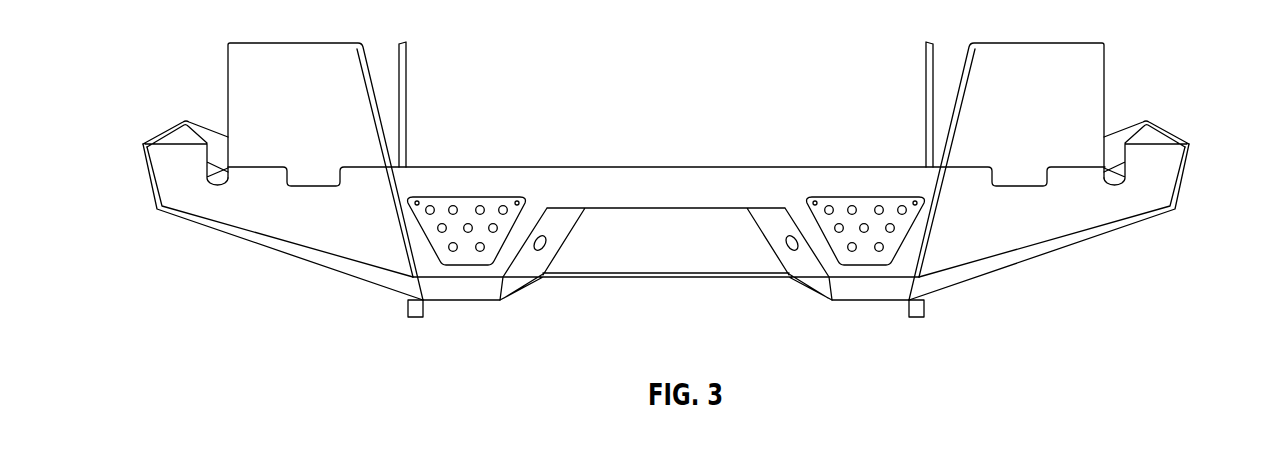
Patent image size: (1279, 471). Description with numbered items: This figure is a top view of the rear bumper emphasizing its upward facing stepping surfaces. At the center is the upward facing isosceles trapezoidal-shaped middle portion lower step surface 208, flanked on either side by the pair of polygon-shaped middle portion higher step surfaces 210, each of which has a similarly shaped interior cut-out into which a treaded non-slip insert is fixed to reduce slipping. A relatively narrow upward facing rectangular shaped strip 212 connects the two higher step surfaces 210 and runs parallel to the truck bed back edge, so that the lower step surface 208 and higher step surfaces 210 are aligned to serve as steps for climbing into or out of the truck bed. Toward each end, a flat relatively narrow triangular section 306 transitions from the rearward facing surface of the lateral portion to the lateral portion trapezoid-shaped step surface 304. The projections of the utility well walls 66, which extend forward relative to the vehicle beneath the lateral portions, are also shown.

The utility well wall 66 is at (1053, 57).
The middle portion lower step surface 208 is at (718, 245).
The middle portion higher step surfaces 210 is at (845, 208).
The rectangular shaped strip 212 is at (660, 177).
The lateral portion step surface 304 is at (1162, 180).
The triangular section 306 is at (943, 280).